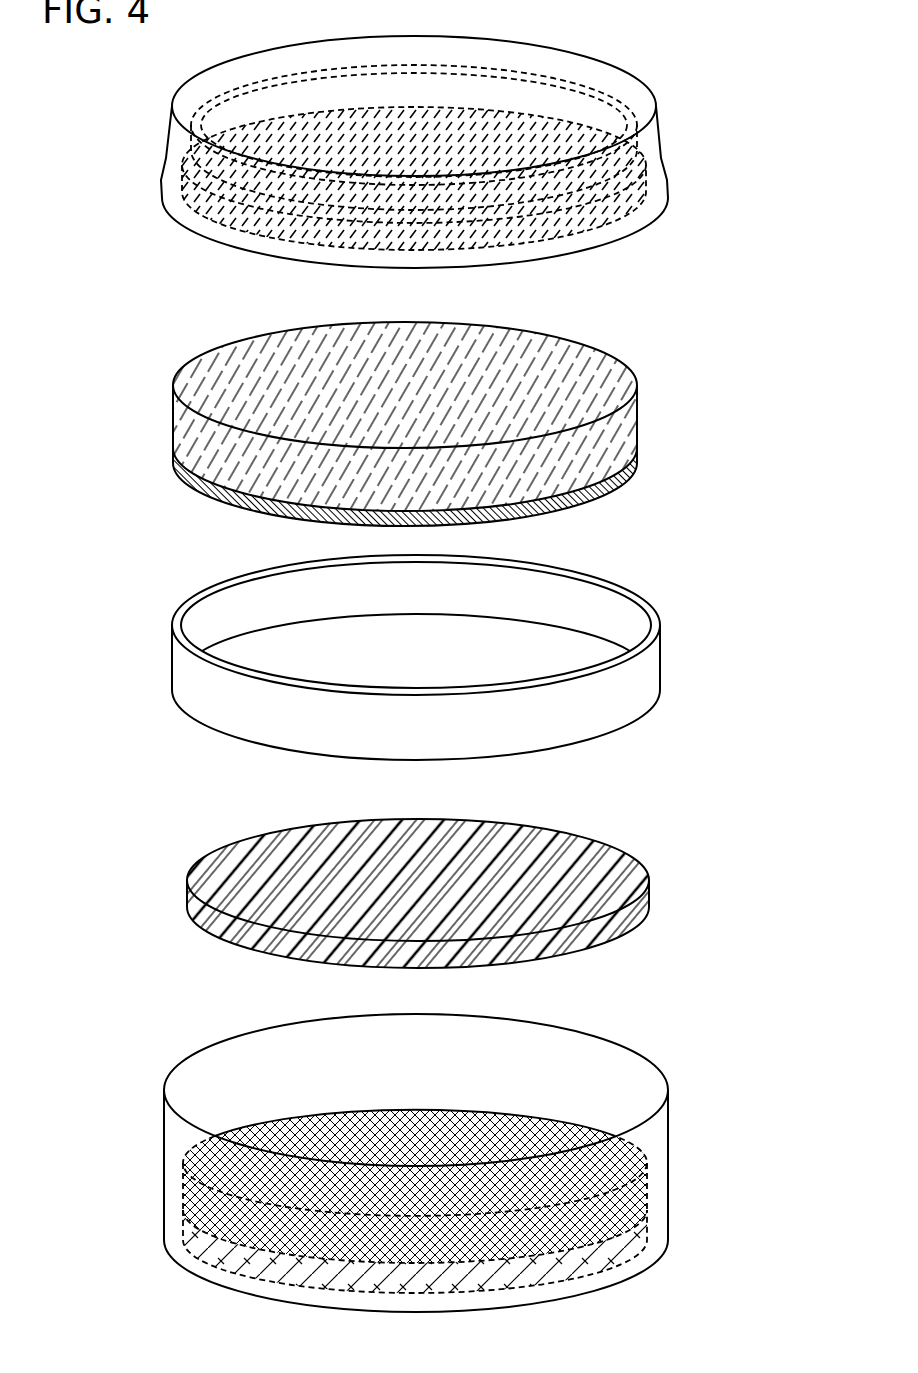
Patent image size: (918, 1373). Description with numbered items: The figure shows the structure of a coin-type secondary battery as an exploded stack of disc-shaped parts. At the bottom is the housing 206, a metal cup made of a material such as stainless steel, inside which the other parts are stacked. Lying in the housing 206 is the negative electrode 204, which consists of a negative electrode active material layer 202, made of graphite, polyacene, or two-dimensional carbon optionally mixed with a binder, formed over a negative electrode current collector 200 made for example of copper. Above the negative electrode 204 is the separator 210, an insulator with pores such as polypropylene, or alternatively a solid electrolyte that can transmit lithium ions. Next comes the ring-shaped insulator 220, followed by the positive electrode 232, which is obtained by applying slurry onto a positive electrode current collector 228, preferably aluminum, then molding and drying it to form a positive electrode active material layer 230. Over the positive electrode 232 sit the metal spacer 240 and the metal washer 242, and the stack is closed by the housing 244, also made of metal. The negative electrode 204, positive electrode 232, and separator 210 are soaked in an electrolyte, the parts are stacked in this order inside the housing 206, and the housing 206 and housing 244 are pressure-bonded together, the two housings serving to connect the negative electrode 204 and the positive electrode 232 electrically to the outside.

The negative electrode current collector 200 is at (668, 1244).
The negative electrode active material layer 202 is at (648, 1205).
The negative electrode 204 is at (498, 1205).
The housing 206 is at (668, 1150).
The separator 210 is at (198, 906).
The ring-shaped insulator 220 is at (658, 663).
The positive electrode current collector 228 is at (638, 428).
The positive electrode active material layer 230 is at (640, 470).
The positive electrode 232 is at (491, 425).
The spacer 240 is at (200, 213).
The washer 242 is at (195, 143).
The housing 244 is at (657, 103).